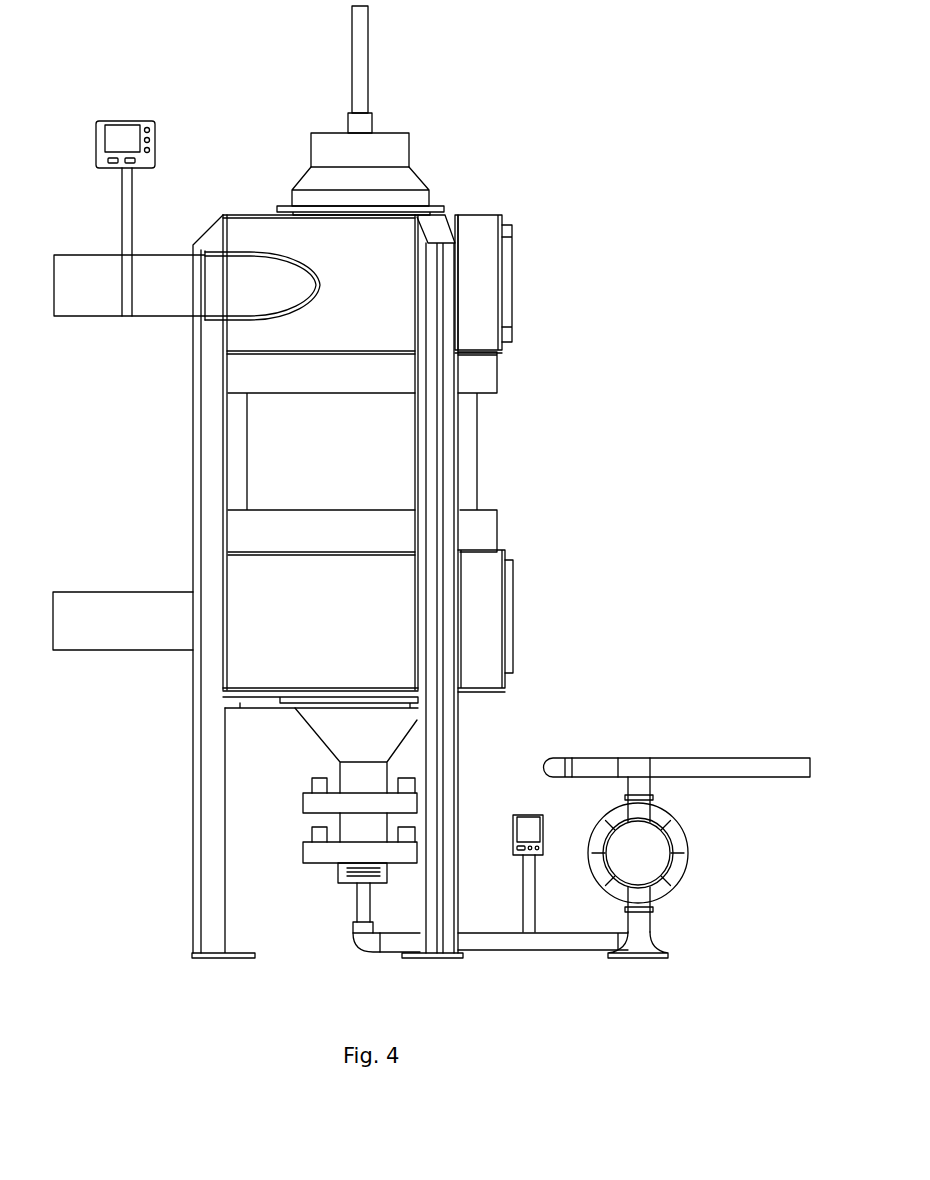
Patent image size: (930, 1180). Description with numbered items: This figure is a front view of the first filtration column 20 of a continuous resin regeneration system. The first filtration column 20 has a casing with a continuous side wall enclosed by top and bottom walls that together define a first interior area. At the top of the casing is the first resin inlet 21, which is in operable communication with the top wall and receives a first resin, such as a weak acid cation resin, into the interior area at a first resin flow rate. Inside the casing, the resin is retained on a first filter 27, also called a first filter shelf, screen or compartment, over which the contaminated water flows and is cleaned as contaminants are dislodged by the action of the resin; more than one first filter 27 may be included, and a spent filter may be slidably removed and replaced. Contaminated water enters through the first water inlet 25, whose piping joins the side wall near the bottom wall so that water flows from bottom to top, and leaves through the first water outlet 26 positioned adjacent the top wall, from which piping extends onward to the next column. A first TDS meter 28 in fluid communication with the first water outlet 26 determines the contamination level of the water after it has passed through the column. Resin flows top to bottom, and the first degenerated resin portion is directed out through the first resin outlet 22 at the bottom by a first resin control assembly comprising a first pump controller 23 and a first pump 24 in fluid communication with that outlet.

The first filtration column 20 is at (574, 106).
The first resin inlet 21 is at (363, 120).
The first resin outlet 22 is at (353, 785).
The first pump controller 23 is at (513, 830).
The first pump 24 is at (680, 840).
The first water inlet 25 is at (103, 638).
The first water outlet 26 is at (155, 302).
The first filter 27 is at (513, 570).
The first TDS meter 28 is at (117, 137).